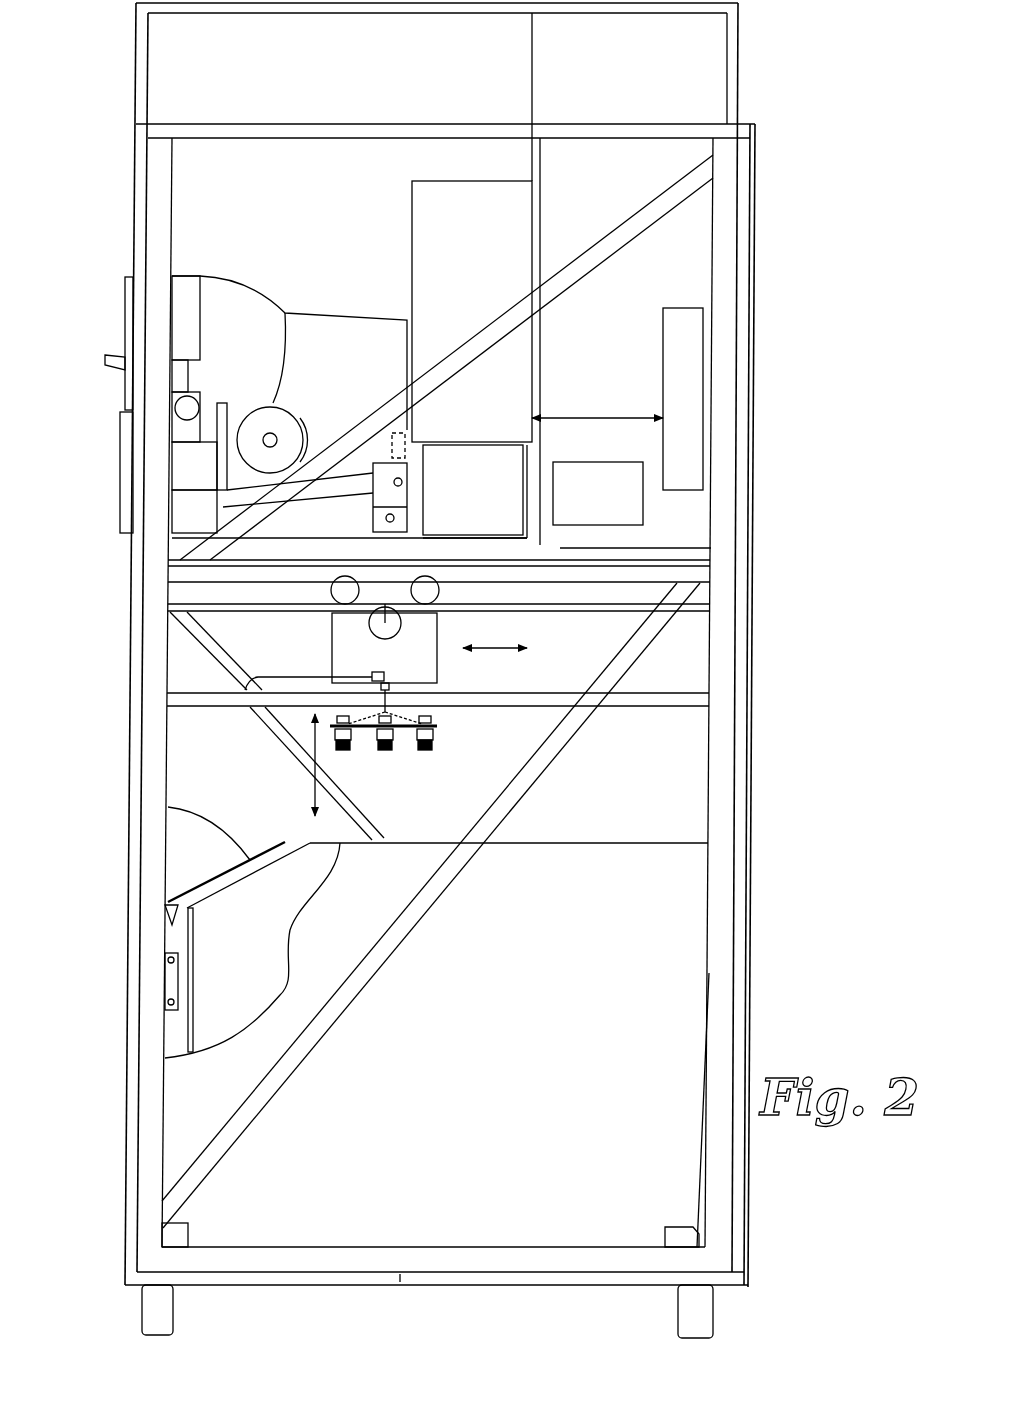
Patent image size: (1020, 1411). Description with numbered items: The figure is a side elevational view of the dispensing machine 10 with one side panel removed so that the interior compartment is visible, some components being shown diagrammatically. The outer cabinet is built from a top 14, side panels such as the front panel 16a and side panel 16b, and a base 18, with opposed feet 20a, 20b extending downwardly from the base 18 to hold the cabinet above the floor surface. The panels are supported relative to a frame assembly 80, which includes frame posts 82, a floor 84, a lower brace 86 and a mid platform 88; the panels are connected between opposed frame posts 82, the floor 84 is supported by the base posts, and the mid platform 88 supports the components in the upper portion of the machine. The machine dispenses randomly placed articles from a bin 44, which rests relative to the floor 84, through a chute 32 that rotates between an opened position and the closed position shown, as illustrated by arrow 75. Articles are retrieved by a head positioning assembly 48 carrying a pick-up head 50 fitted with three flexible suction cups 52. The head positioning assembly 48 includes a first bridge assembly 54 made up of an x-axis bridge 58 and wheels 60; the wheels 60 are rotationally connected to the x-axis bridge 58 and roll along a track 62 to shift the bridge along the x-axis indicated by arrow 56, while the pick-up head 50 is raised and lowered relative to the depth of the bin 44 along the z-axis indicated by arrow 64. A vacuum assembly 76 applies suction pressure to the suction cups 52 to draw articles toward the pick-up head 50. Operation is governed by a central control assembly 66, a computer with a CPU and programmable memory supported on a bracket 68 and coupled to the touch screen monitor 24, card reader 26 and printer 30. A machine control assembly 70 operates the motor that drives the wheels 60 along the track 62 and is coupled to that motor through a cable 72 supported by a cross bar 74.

The dispensing machine 10 is at (772, 372).
The top 14 is at (752, 54).
The front panel 16a is at (126, 695).
The side panel 16b is at (756, 636).
The base 18 is at (764, 1280).
The foot 20a is at (175, 1311).
The foot 20b is at (715, 1318).
The touch screen monitor 24 is at (232, 290).
The card reader 26 is at (117, 352).
The printer 30 is at (284, 430).
The chute 32 is at (250, 850).
The bin 44 is at (672, 892).
The head positioning assembly 48 is at (440, 627).
The pick-up head 50 is at (442, 738).
The suction cups 52 is at (348, 752).
The first bridge assembly 54 is at (330, 624).
The arrow 56 is at (520, 648).
The x-axis bridge 58 is at (384, 658).
The wheels 60 is at (345, 576).
The track 62 is at (644, 604).
The arrow 64 is at (313, 752).
The central control assembly 66 is at (476, 341).
The bracket 68 is at (455, 442).
The machine control assembly 70 is at (682, 338).
The cable 72 is at (306, 672).
The cross bar 74 is at (496, 700).
The arrow 75 is at (237, 813).
The vacuum assembly 76 is at (597, 471).
The frame assembly 80 is at (156, 588).
The frame posts 82 is at (160, 158).
The floor 84 is at (403, 1287).
The lower brace 86 is at (412, 1236).
The mid platform 88 is at (668, 560).